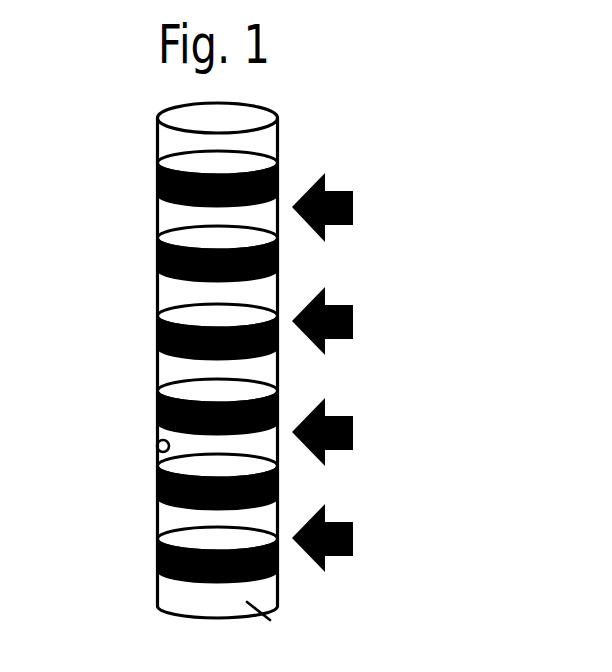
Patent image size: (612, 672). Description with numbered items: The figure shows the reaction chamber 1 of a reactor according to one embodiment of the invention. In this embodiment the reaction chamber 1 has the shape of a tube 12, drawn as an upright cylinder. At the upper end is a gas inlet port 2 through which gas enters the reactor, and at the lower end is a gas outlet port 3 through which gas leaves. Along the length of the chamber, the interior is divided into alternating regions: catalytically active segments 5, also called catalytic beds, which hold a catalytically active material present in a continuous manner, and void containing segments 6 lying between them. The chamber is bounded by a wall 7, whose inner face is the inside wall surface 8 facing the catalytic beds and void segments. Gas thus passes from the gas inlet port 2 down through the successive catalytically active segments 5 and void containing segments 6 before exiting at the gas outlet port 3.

The reaction chamber 1 is at (150, 172).
The gas inlet port 2 is at (240, 122).
The gas outlet port 3 is at (258, 610).
The catalytically active segments 5 is at (155, 332).
The void containing segments 6 is at (170, 218).
The wall 7 is at (157, 603).
The inside wall surface 8 is at (158, 445).
The tube 12 is at (217, 623).